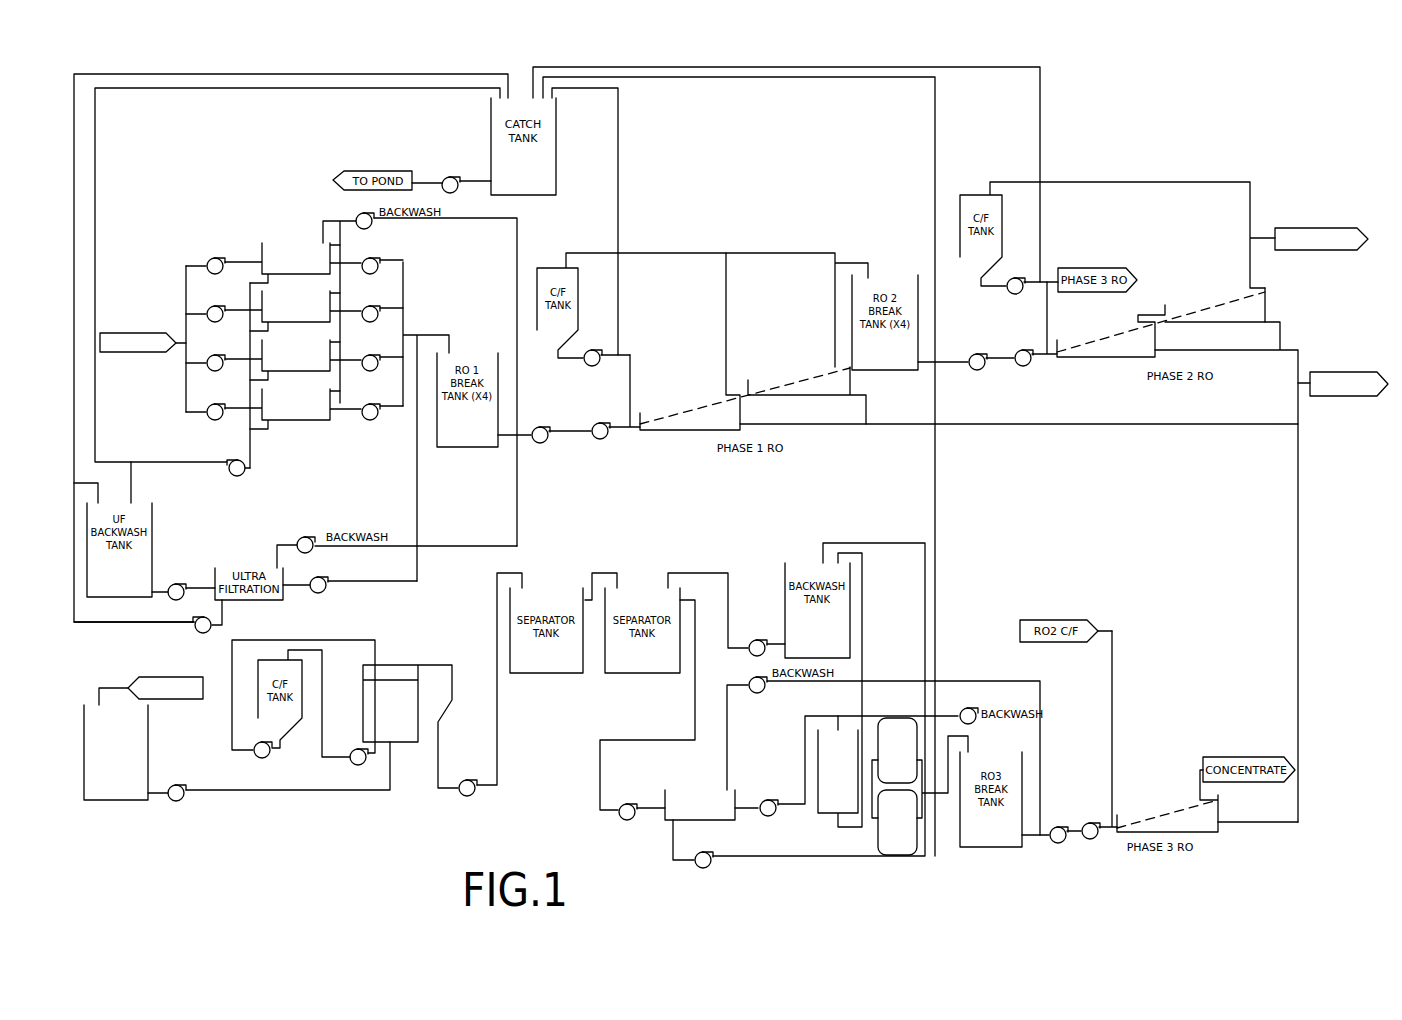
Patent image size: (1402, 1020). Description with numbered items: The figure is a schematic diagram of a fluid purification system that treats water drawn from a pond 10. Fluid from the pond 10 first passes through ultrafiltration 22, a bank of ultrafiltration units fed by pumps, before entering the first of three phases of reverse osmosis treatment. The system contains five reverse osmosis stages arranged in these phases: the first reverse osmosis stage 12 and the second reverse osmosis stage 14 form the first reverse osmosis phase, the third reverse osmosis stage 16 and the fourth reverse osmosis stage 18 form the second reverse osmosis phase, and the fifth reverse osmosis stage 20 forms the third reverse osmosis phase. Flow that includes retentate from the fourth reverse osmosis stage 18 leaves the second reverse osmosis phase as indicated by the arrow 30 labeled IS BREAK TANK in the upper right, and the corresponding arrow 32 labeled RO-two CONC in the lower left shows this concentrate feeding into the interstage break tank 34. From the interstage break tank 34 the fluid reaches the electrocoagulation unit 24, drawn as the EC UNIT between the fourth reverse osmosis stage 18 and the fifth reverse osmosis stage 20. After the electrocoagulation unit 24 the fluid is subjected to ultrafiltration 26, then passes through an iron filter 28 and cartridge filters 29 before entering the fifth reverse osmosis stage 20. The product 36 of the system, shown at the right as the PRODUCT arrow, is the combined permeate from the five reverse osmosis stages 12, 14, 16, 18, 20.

The pond 10 is at (118, 331).
The first reverse osmosis stage 12 is at (682, 432).
The second reverse osmosis stage 14 is at (826, 400).
The third reverse osmosis stage 16 is at (1106, 358).
The fourth reverse osmosis stage 18 is at (1270, 296).
The fifth reverse osmosis stage 20 is at (1205, 835).
The ultrafiltration 22 is at (302, 442).
The electrocoagulation unit 24 is at (378, 734).
The ultrafiltration 26 is at (747, 790).
The iron filter 28 is at (830, 793).
The cartridge filters 29 is at (905, 722).
The arrow labeled IS BREAK TANK 30 is at (1310, 227).
The arrow labeled RO2 CONC 32 is at (160, 678).
The interstage break tank 34 is at (112, 800).
The product 36 is at (1355, 372).